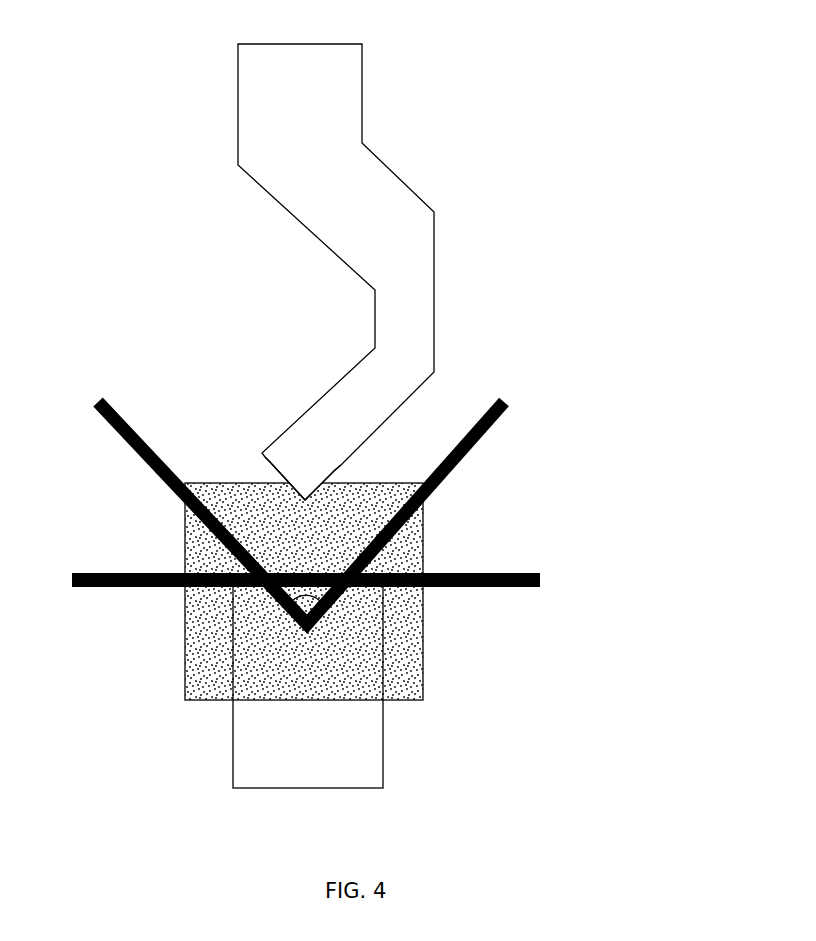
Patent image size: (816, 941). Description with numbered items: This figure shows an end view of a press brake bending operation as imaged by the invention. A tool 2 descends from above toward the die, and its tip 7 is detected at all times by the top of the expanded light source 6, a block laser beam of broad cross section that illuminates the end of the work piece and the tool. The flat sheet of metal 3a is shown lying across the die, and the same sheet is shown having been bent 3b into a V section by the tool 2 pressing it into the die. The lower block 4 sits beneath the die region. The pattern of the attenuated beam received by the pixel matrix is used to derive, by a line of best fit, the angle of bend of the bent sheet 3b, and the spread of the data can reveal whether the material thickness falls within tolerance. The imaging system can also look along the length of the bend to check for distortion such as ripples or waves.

The tool 2 is at (434, 213).
The sheet of metal 3a is at (542, 581).
The bent sheet 3b is at (118, 452).
The lower die block 4 is at (385, 727).
The expanded light source 6 is at (425, 517).
The tip of the tool 7 is at (258, 470).